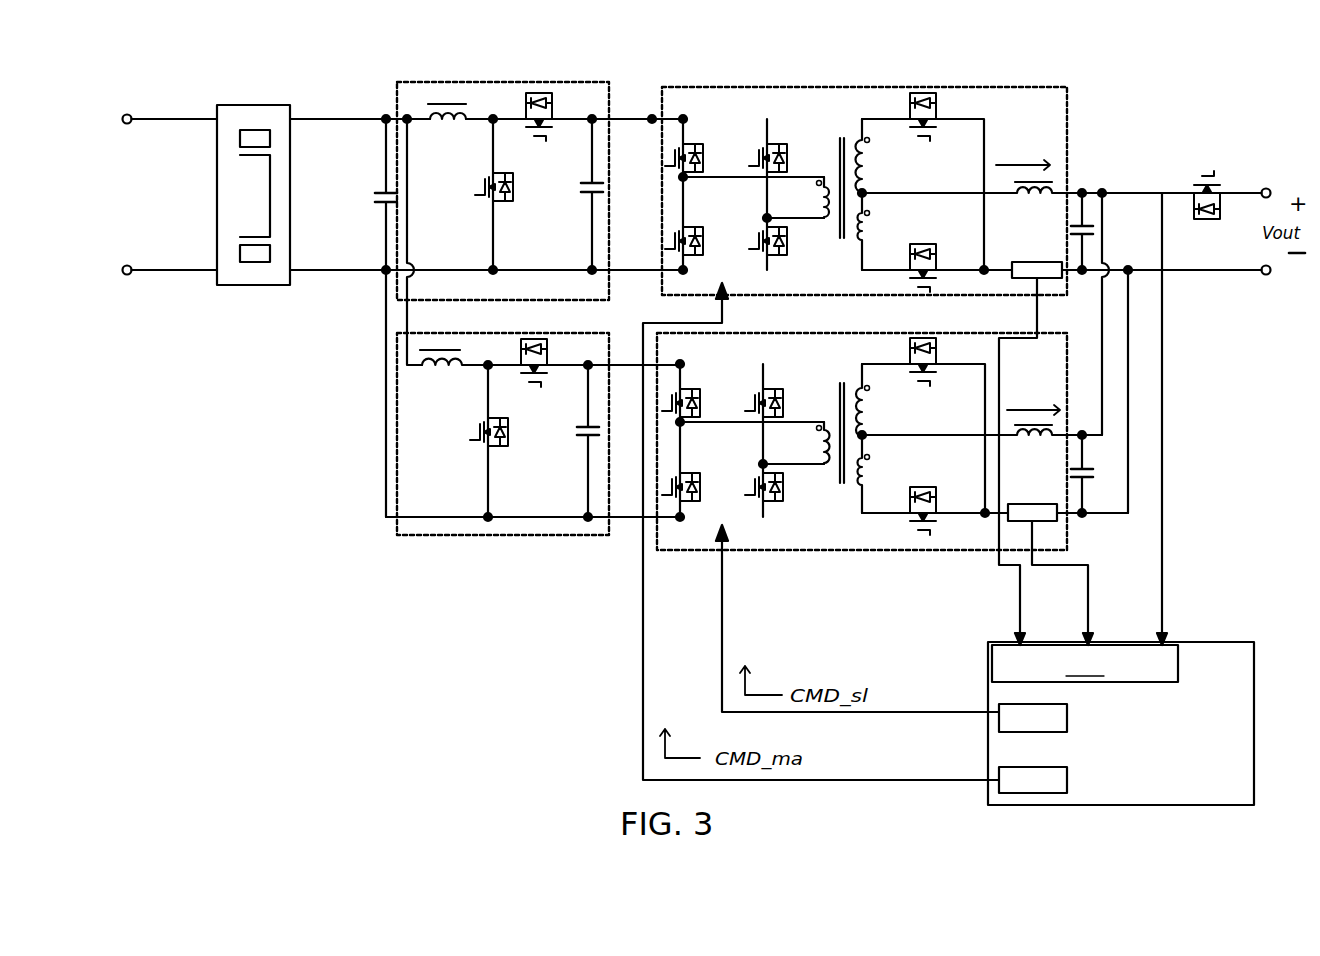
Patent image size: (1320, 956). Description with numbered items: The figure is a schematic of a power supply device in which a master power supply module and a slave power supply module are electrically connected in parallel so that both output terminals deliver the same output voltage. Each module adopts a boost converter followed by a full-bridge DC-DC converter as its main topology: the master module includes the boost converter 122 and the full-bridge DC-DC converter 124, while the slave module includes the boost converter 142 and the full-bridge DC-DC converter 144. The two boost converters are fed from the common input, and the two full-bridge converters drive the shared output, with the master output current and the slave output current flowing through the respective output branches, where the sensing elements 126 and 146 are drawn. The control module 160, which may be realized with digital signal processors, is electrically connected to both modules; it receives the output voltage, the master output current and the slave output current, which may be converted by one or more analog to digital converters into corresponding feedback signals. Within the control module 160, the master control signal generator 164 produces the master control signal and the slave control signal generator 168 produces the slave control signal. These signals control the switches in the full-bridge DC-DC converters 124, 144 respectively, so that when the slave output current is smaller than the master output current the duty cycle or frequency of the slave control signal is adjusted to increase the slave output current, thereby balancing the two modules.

The boost converter 122 is at (497, 82).
The full-bridge DC-DC converter 124 is at (780, 87).
The master current sense resistor 126 is at (1030, 251).
The boost converter 142 is at (533, 536).
The full-bridge DC-DC converter 144 is at (813, 550).
The slave current sense resistor 146 is at (1032, 494).
The control module 160 is at (1140, 735).
The master control signal generator 164 is at (1047, 790).
The slave control signal generator 168 is at (1047, 727).